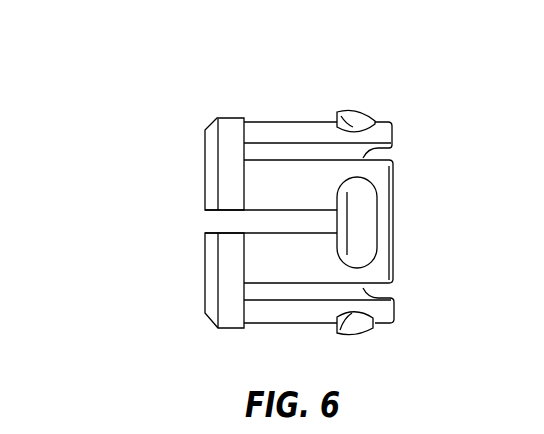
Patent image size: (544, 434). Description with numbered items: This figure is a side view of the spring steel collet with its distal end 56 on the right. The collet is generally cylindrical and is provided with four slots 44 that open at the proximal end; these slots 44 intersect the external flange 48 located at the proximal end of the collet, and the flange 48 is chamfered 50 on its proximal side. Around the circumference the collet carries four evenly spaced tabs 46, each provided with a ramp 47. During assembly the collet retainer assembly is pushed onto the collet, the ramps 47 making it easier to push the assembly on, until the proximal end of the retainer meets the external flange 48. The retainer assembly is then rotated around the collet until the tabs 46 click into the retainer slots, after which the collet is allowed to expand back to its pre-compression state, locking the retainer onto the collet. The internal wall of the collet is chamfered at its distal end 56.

The slots 44 is at (222, 218).
The external flange 48 is at (229, 152).
The chamfer 50 is at (208, 280).
The tabs 46 is at (348, 124).
The ramps 47 is at (363, 325).
The distal end 56 is at (395, 214).